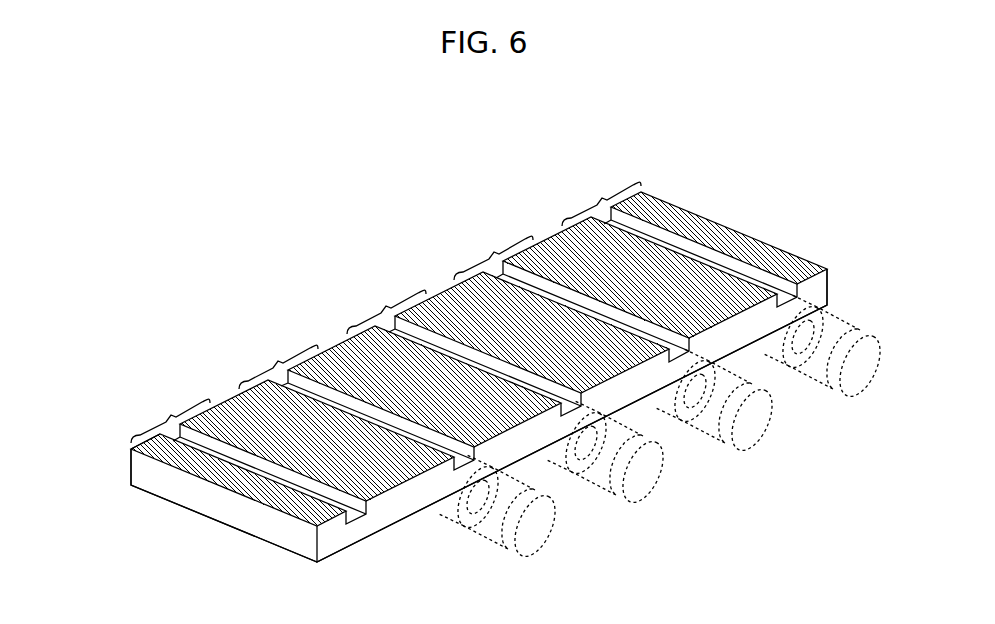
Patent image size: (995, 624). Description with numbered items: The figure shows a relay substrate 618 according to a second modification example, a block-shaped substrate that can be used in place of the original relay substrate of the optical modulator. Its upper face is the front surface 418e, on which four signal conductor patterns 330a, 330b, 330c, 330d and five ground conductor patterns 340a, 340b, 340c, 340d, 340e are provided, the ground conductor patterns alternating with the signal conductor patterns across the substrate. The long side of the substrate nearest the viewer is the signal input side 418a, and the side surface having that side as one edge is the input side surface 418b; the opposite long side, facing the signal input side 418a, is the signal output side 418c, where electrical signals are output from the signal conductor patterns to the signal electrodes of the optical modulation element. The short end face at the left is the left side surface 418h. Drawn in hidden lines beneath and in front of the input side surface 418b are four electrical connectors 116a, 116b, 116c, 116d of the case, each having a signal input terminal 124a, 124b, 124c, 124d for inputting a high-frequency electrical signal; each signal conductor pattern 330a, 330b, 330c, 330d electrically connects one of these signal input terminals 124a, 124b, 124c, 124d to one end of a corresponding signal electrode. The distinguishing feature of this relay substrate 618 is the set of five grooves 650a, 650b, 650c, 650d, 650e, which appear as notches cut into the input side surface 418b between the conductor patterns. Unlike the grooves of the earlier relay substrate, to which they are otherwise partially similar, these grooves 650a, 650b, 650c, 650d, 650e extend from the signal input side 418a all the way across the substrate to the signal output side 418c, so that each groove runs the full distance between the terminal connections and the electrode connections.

The relay substrate 618 is at (183, 228).
The signal input side 418a is at (292, 509).
The input side surface 418b is at (340, 534).
The signal output side 418c is at (131, 449).
The front surface 418e is at (720, 237).
The left side surface 418h is at (170, 484).
The signal conductor pattern 330a is at (567, 240).
The signal conductor pattern 330b is at (457, 297).
The signal conductor pattern 330c is at (350, 347).
The signal conductor pattern 330d is at (237, 403).
The ground conductor pattern 340a is at (600, 191).
The ground conductor pattern 340b is at (492, 245).
The ground conductor pattern 340c is at (384, 299).
The ground conductor pattern 340d is at (276, 354).
The ground conductor pattern 340e is at (169, 408).
The groove 650a is at (799, 297).
The groove 650b is at (691, 351).
The groove 650c is at (583, 406).
The groove 650d is at (476, 460).
The groove 650e is at (368, 518).
The electrical connector 116a is at (882, 356).
The electrical connector 116b is at (772, 440).
The electrical connector 116c is at (663, 484).
The electrical connector 116d is at (546, 546).
The signal input terminal 124a is at (822, 360).
The signal input terminal 124b is at (722, 418).
The signal input terminal 124c is at (612, 468).
The signal input terminal 124d is at (505, 522).